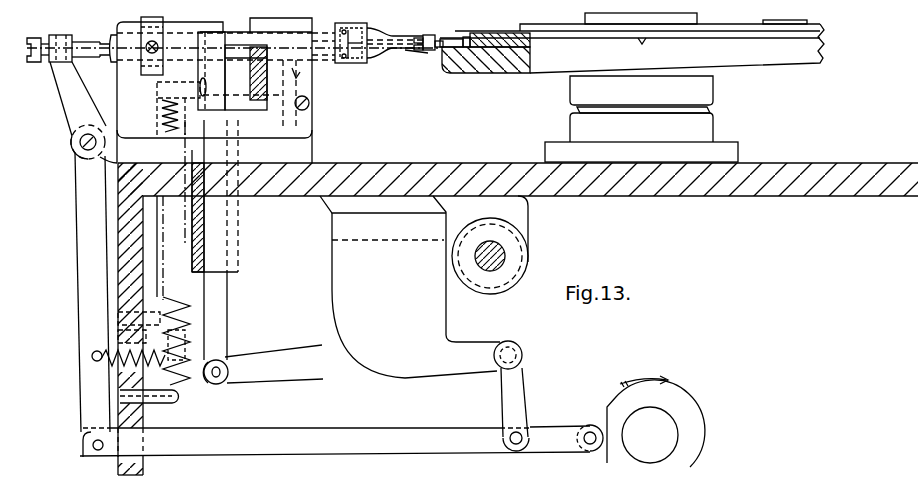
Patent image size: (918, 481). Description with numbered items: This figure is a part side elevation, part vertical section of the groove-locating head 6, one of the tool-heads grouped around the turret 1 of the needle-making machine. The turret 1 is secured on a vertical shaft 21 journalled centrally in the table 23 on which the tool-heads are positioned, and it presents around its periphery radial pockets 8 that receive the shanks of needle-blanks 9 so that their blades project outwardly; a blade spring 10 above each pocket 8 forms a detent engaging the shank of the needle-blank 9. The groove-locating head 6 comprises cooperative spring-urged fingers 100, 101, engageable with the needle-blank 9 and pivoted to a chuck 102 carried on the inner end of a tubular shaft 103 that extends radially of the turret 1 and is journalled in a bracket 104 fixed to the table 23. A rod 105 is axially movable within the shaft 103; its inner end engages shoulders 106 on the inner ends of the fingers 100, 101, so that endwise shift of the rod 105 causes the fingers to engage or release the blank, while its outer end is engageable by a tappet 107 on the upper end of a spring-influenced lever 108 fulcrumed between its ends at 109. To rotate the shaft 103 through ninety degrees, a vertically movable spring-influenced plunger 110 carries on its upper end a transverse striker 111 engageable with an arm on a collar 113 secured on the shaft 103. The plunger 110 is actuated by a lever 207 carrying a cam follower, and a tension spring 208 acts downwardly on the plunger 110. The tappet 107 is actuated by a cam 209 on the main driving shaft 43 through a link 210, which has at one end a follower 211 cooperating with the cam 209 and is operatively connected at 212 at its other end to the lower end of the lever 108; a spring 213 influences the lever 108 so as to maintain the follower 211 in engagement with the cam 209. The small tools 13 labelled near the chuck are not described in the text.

The turret 1 is at (632, 43).
The groove-locating head 6 is at (323, 319).
The radial pocket 8 is at (456, 52).
The needle-blank 9 is at (443, 39).
The blade spring 10 is at (467, 38).
The cutting tool 13 is at (418, 38).
The vertical shaft 21 is at (610, 112).
The table 23 is at (506, 160).
The main driving shaft 43 is at (650, 435).
The spring-urged finger 100 is at (419, 51).
The spring-urged finger 101 is at (429, 40).
The chuck 102 is at (372, 56).
The tubular shaft 103 is at (323, 57).
The bracket 104 is at (214, 92).
The rod 105 is at (109, 42).
The shoulder 106 is at (363, 33).
The tappet 107 is at (83, 49).
The spring-influenced lever 108 is at (70, 105).
The fulcrum 109 is at (74, 157).
The plunger 110 is at (218, 293).
The transverse striker 111 is at (242, 88).
The collar 113 is at (254, 26).
The lever 207 is at (276, 362).
The tension spring 208 is at (182, 290).
The cam 209 is at (673, 405).
The link 210 is at (351, 438).
The follower 211 is at (587, 428).
The connection 212 is at (93, 444).
The spring 213 is at (155, 364).